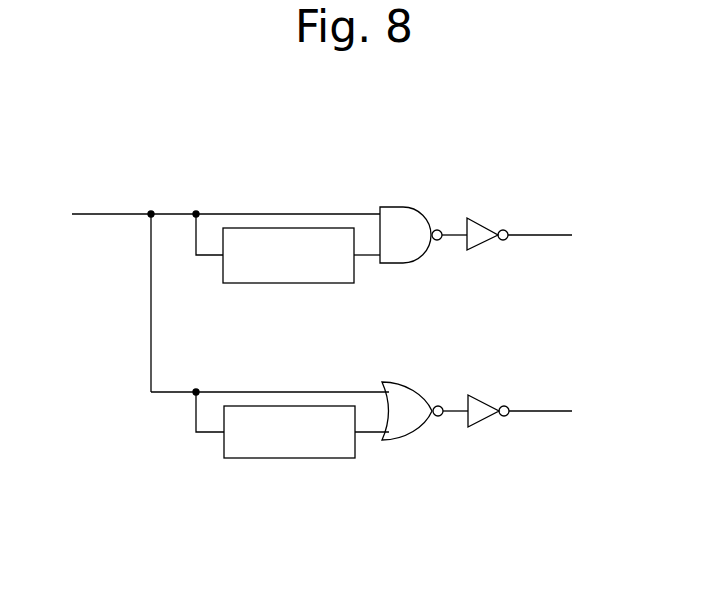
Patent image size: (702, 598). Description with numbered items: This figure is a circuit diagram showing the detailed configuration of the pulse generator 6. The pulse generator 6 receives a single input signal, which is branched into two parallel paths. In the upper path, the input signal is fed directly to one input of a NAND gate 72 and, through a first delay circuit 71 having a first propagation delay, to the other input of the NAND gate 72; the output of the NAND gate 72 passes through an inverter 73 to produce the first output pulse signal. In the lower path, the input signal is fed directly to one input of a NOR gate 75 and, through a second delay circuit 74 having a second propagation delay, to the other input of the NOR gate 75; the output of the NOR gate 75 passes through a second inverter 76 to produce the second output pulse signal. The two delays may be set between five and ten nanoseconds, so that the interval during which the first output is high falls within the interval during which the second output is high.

The pulse generator 6 is at (133, 156).
The first delay circuit 71 is at (310, 284).
The NAND gate 72 is at (413, 207).
The inverter 73 is at (486, 228).
The second delay circuit 74 is at (312, 460).
The NOR gate 75 is at (415, 383).
The inverter 76 is at (487, 404).